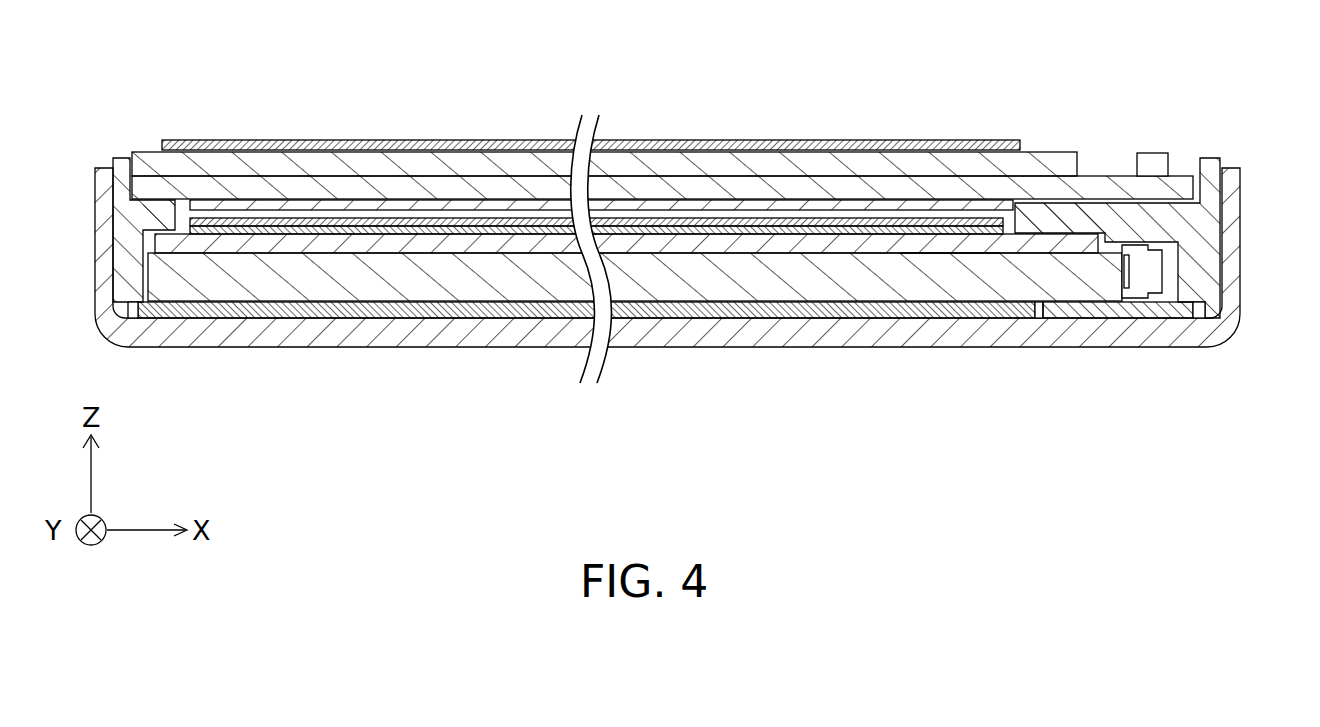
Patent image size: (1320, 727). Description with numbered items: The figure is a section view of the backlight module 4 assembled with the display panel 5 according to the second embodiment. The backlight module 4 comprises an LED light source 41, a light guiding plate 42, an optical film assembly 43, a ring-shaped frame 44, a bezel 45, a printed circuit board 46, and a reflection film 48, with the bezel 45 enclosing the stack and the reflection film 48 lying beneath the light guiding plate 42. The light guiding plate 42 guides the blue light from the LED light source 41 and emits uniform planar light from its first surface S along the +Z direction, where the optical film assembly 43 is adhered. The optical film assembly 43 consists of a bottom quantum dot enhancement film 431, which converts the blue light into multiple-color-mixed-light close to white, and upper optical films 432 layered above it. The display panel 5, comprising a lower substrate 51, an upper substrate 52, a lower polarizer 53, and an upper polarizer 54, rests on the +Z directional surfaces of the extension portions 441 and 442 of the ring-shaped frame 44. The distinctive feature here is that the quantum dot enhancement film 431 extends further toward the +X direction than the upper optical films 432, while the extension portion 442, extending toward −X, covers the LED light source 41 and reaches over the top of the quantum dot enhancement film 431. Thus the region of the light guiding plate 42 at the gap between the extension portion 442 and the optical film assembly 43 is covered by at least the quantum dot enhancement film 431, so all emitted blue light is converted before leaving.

The backlight module 4 is at (632, 333).
The display panel 5 is at (618, 138).
The LED light source 41 is at (1140, 272).
The light guiding plate 42 is at (400, 285).
The optical film assembly 43 is at (626, 333).
The quantum dot enhancement film 431 is at (735, 244).
The upper optical films 432 is at (818, 229).
The ring-shaped frame 44 is at (661, 192).
The extension portion 441 is at (153, 220).
The extension portion 442 is at (1130, 220).
The bezel 45 is at (1237, 247).
The printed circuit board 46 is at (1176, 310).
The reflection film 48 is at (480, 306).
The lower substrate 51 is at (837, 188).
The upper substrate 52 is at (900, 162).
The lower polarizer 53 is at (777, 203).
The upper polarizer 54 is at (955, 146).
The first surface S is at (963, 254).